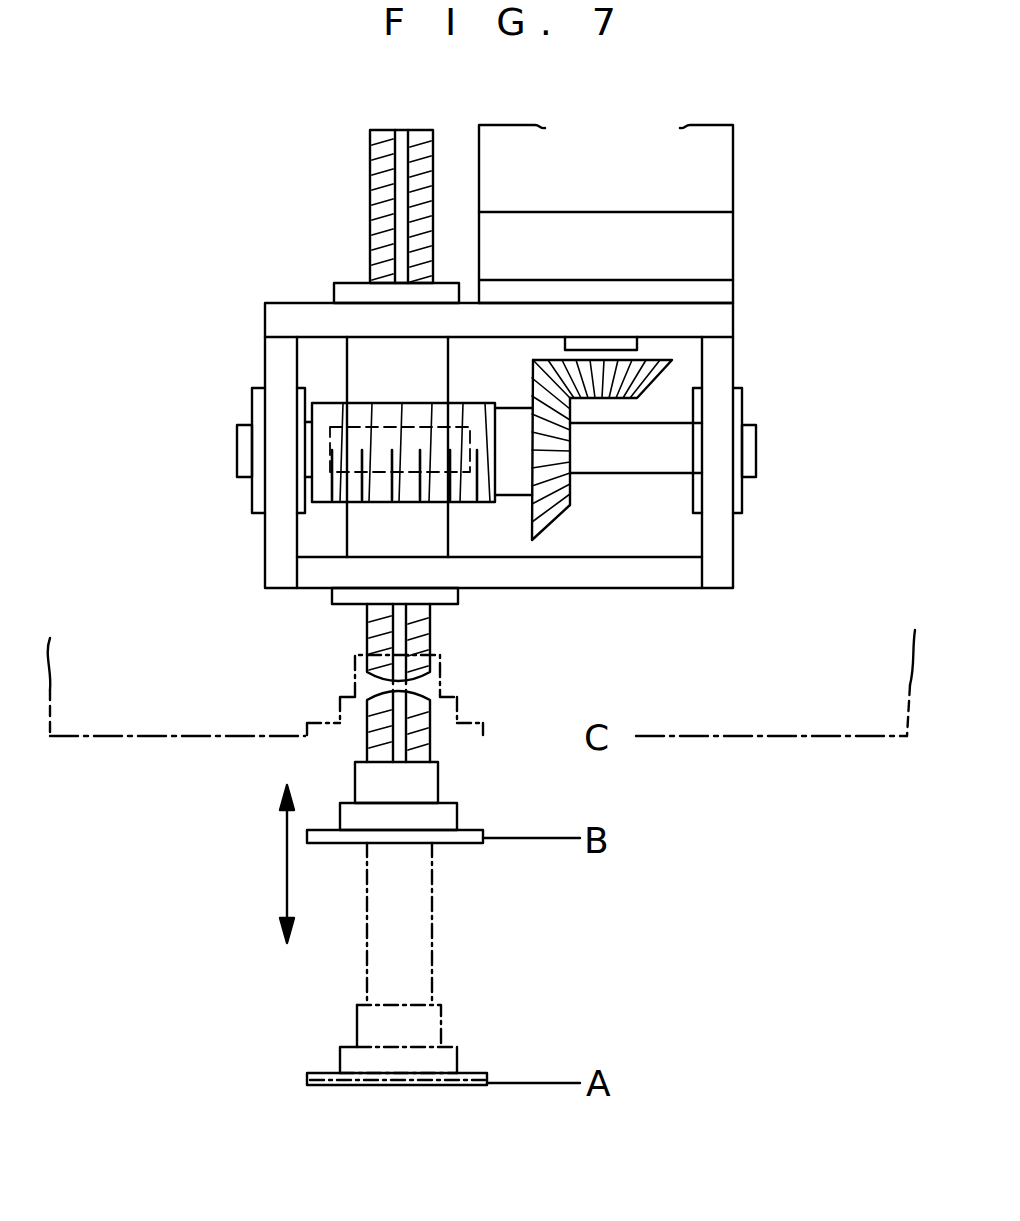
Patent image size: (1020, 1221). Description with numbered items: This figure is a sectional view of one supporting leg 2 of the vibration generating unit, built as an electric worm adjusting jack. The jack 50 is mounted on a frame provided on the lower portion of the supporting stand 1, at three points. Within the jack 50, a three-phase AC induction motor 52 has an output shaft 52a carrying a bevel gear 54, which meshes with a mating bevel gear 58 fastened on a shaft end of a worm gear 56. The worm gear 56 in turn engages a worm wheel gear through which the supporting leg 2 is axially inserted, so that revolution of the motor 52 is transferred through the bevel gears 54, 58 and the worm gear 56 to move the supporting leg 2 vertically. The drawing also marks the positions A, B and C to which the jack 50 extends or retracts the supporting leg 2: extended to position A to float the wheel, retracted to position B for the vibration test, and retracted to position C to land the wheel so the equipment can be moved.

The supporting stand 1 is at (745, 710).
The supporting leg 2 is at (372, 160).
The jack 50 is at (238, 331).
The 3-phase AC induction motor 52 is at (722, 178).
The output shaft 52a is at (640, 350).
The bevel gear 54 is at (651, 383).
The worm gear 56 is at (388, 405).
The bevel gear 58 is at (562, 504).